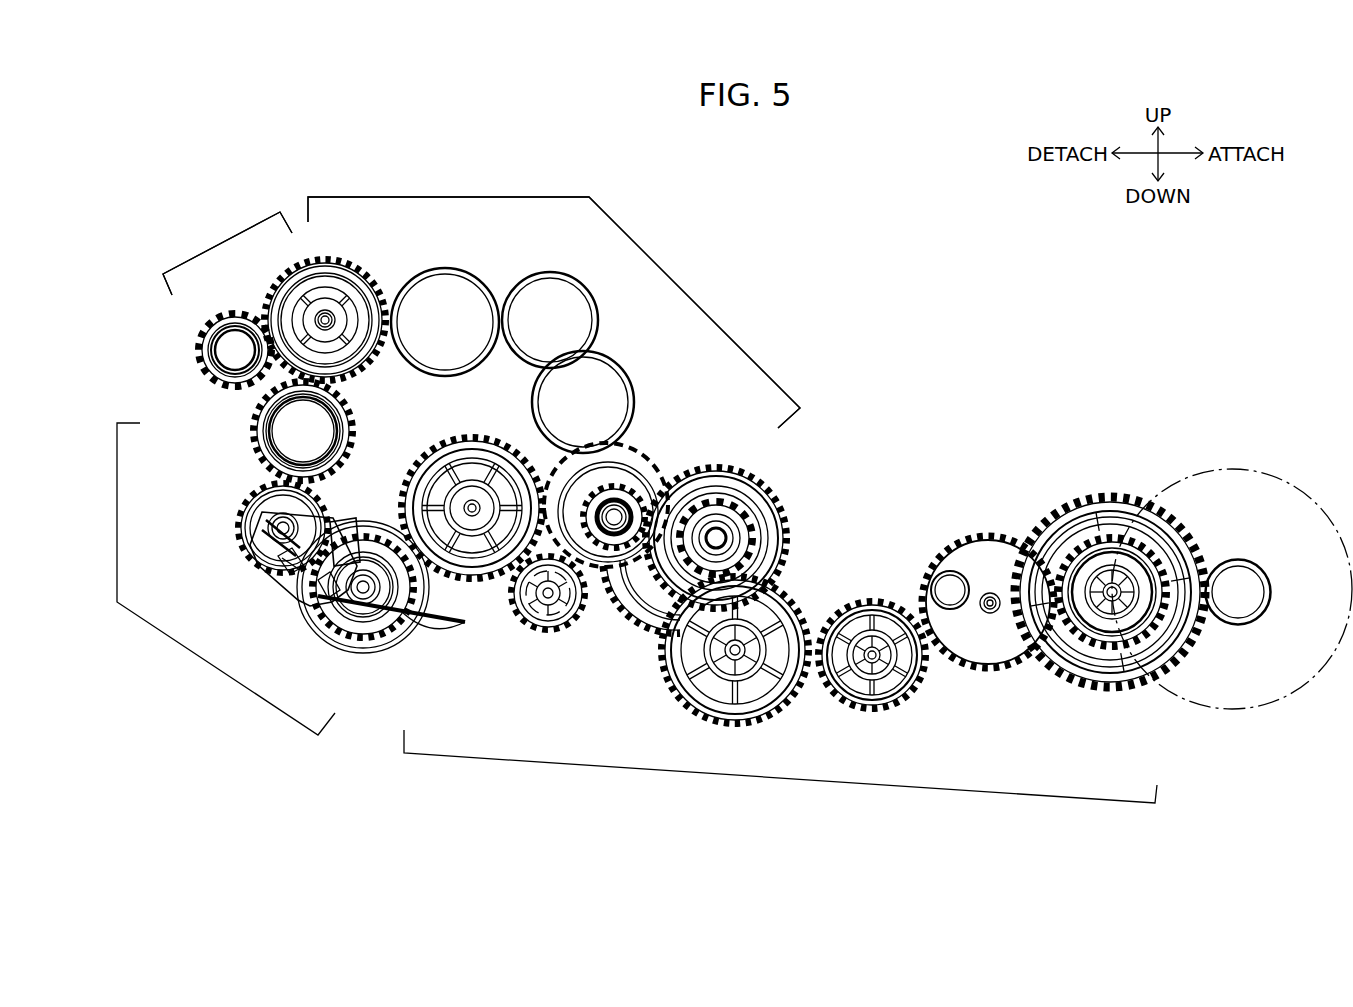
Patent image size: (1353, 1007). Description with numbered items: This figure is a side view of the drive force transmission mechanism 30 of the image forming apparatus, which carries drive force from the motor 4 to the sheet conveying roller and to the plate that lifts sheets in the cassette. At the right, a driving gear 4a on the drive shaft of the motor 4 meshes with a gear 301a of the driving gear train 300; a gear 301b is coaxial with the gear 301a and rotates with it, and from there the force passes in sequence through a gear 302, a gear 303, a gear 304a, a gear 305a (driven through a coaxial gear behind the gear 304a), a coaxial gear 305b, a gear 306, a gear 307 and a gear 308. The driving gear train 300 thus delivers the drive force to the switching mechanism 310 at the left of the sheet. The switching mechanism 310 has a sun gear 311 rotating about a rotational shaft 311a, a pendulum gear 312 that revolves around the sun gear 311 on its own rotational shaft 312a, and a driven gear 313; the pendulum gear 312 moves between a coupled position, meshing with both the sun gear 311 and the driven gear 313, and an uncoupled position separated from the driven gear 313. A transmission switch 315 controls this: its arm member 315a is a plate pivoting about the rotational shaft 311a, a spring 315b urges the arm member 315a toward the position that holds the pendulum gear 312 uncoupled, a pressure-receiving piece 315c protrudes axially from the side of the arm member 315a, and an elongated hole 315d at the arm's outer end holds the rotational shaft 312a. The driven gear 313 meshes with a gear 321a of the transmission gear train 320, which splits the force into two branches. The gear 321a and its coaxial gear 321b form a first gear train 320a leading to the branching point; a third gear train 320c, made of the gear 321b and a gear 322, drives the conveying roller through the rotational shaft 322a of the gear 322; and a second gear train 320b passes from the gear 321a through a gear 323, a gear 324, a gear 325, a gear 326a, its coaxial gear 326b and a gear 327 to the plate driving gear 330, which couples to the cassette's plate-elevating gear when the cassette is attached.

The drive force transmission mechanism 30 is at (966, 309).
The driving gear train 300 is at (780, 772).
The gear 301a is at (1117, 680).
The gear 301b is at (1075, 640).
The gear 302 is at (988, 672).
The gear 303 is at (890, 713).
The gear 304a is at (768, 722).
The gear 305a is at (658, 642).
The gear 305b is at (610, 622).
The gear 306 is at (553, 633).
The gear 307 is at (482, 583).
The gear 308 is at (420, 632).
The switching mechanism 310 is at (226, 579).
The sun gear 311 is at (313, 615).
The rotational shaft 311a is at (363, 600).
The pendulum gear 312 is at (250, 502).
The rotational shaft 312a is at (272, 530).
The driven gear 313 is at (253, 431).
The transmission switch 315 is at (256, 586).
The arm member 315a is at (289, 592).
The spring 315b is at (387, 633).
The pressure-receiving piece 315c is at (331, 540).
The elongated hole 315d is at (283, 562).
The transmission gear train 320 is at (276, 188).
The first gear train 320a is at (440, 455).
The second gear train 320b is at (554, 299).
The third gear train 320c is at (227, 253).
The gear 321a is at (380, 378).
The gear 321b is at (378, 349).
The gear 322 is at (214, 318).
The rotational shaft 322a is at (232, 354).
The gear 323 is at (442, 266).
The gear 324 is at (548, 272).
The gear 325 is at (610, 368).
The gear 326a is at (633, 443).
The gear 326b is at (640, 492).
The gear 327 is at (714, 466).
The plate driving gear 330 is at (752, 533).
The motor 4 is at (1245, 470).
The driving gear 4a is at (1250, 560).